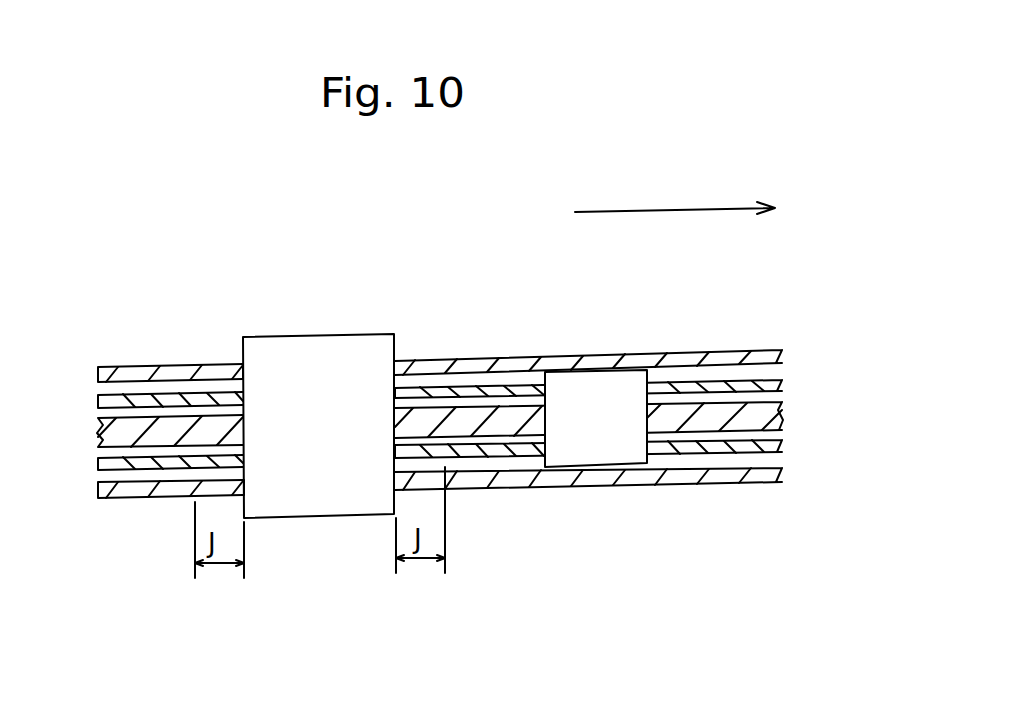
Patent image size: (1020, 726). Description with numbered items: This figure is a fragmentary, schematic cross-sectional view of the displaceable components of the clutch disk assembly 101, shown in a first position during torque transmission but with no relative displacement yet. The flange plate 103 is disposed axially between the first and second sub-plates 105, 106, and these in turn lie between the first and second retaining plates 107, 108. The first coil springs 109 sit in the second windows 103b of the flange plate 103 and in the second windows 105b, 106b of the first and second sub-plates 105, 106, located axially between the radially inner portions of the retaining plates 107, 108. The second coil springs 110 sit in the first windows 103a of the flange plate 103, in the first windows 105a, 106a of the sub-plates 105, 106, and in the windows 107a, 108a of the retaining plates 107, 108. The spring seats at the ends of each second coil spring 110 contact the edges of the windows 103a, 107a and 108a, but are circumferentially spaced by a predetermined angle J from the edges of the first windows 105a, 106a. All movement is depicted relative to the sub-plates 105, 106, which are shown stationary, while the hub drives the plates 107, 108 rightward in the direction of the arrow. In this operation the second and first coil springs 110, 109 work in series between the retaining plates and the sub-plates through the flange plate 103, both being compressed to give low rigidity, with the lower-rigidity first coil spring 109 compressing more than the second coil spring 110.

The clutch disk assembly 101 is at (708, 271).
The flange plate 103 is at (478, 418).
The first windows 103a is at (392, 427).
The second windows 103b is at (638, 419).
The first sub-plate 105 is at (727, 385).
The first windows 105a is at (443, 393).
The second windows 105b is at (645, 383).
The second sub-plate 106 is at (728, 445).
The first windows 106a is at (443, 452).
The second windows 106b is at (648, 455).
The first retaining plate 107 is at (173, 372).
The windows 107a is at (243, 373).
The second retaining plate 108 is at (168, 493).
The windows 108a is at (245, 490).
The first coil springs 109 is at (567, 388).
The second coil springs 110 is at (325, 367).